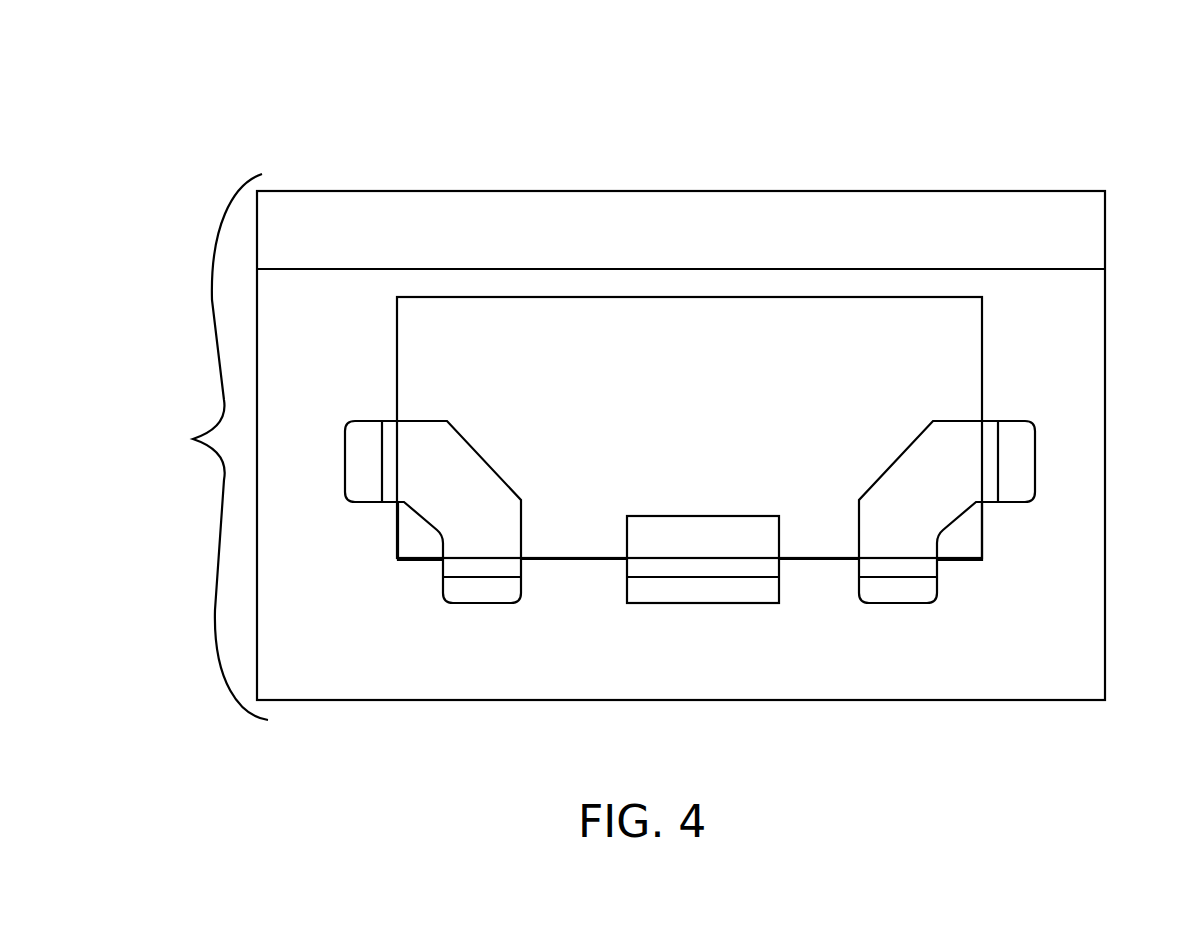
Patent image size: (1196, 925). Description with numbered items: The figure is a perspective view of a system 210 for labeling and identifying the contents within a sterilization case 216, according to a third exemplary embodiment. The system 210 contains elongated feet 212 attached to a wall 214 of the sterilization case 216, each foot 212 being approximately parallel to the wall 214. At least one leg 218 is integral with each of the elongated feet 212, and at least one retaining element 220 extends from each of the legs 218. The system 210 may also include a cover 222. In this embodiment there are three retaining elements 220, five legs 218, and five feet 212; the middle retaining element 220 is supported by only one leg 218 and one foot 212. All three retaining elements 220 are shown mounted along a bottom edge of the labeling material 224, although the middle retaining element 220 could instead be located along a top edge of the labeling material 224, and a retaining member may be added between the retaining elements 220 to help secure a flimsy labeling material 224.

The system 210 is at (1022, 132).
The elongated feet 212 is at (360, 482).
The wall 214 is at (1106, 500).
The sterilization case 216 is at (206, 447).
The leg 218 is at (388, 490).
The retaining element 220 is at (490, 463).
The cover 222 is at (880, 208).
The labeling material 224 is at (986, 331).